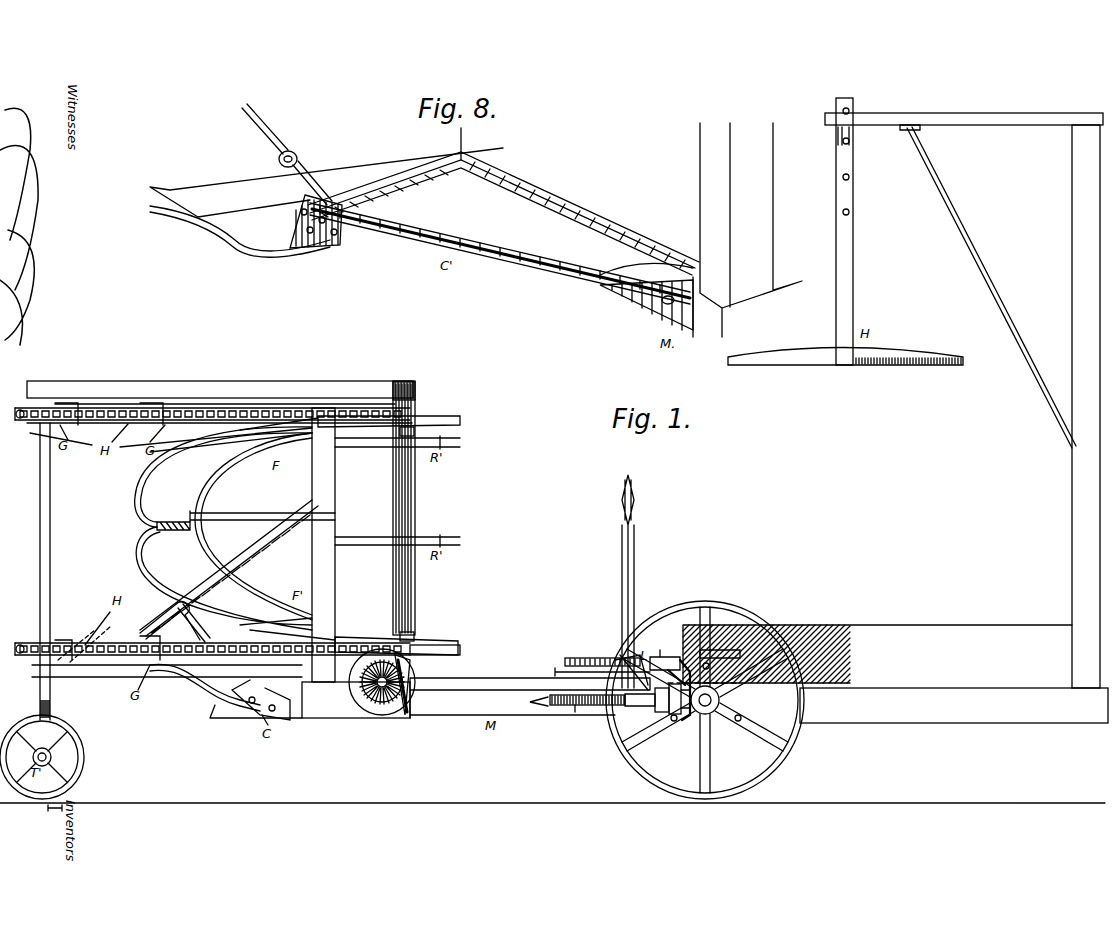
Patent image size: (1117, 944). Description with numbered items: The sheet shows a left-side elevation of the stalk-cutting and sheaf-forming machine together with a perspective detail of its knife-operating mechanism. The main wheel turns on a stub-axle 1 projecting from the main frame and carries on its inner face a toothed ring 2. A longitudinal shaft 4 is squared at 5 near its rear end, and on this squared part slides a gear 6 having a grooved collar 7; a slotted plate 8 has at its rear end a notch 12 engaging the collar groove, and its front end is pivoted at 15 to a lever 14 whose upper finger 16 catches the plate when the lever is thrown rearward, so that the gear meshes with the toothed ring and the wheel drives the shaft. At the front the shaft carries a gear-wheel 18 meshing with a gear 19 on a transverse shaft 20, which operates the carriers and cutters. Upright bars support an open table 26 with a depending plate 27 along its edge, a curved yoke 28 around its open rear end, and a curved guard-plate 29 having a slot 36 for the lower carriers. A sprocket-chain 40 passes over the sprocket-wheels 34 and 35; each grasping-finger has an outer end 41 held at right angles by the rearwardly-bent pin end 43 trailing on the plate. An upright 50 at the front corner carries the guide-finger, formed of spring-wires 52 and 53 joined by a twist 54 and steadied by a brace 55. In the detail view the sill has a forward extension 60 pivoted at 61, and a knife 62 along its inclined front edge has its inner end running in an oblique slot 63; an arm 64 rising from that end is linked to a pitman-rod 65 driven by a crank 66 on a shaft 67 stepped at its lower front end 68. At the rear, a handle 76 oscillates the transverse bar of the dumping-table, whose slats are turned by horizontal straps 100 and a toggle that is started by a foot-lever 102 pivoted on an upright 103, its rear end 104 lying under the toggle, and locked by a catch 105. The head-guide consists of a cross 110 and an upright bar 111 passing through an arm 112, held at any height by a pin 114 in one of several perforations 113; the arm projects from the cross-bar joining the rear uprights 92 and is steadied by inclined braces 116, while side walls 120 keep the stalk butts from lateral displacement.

In FIG. 1, the stub-axle 1 is at (712, 698).
In FIG. 1, the toothed ring 2 is at (690, 735).
In FIG. 1, the longitudinal shaft 4 is at (485, 690).
In FIG. 1, the squared portion of shaft 5 is at (658, 712).
In FIG. 1, the gear 6 is at (672, 714).
In FIG. 1, the grooved collar 7 is at (683, 712).
In FIG. 1, the plate 8 is at (600, 706).
In FIG. 1, the notch 12 is at (680, 664).
In FIG. 1, the lever 14 is at (560, 705).
In FIG. 1, the pivot 15 is at (540, 700).
In FIG. 1, the finger 16 is at (580, 706).
In FIG. 1, the gear-wheel 18 is at (404, 712).
In FIG. 1, the gear 19 is at (380, 705).
In FIG. 1, the transverse shaft 20 is at (350, 690).
In FIG. 1, the open table 26 is at (220, 383).
In FIG. 1, the depending plate 27 is at (210, 445).
In FIG. 1, the curved yoke 28 is at (415, 386).
In FIG. 1, the curved guard-plate 29 is at (415, 500).
In FIG. 1, the sprocket-wheel 34 is at (18, 420).
In FIG. 1, the sprocket-wheel 35 is at (414, 432).
In FIG. 1, the slot 36 is at (360, 640).
In FIG. 1, the sprocket-chain 40 is at (195, 410).
In FIG. 1, the outer end of grasping-finger 41 is at (460, 420).
In FIG. 1, the rearwardly-bent end of pivot-pin 43 is at (160, 403).
In FIG. 1, the upright 50 is at (335, 503).
In FIG. 1, the spring-wire 52 is at (252, 470).
In FIG. 1, the spring-wire 53 is at (270, 605).
In FIG. 1, the twist 54 is at (183, 522).
In FIG. 1, the brace 55 is at (245, 513).
In FIG. 8, the forward extension of sill 60 is at (503, 213).
In FIG. 8, the pivot point 61 is at (662, 300).
In FIG. 8, the knife 62 is at (500, 260).
In FIG. 8, the oblique slot 63 is at (311, 221).
In FIG. 8, the arm 64 is at (300, 170).
In FIG. 1, the arm 64 is at (222, 690).
In FIG. 8, the pitman-rod 65 is at (262, 128).
In FIG. 1, the pitman-rod 65 is at (205, 625).
In FIG. 1, the crank 66 is at (162, 615).
In FIG. 1, the shaft 67 is at (255, 555).
In FIG. 1, the lower front end of shaft 68 is at (92, 665).
In FIG. 1, the handle 76 is at (634, 545).
In FIG. 1, the rear upright 92 is at (1072, 312).
In FIG. 1, the horizontal strap 100 is at (638, 662).
In FIG. 1, the foot-lever 102 is at (590, 658).
In FIG. 1, the upright 103 is at (600, 672).
In FIG. 1, the rear end of foot-lever 104 is at (725, 665).
In FIG. 1, the catch or button 105 is at (664, 657).
In FIG. 1, the cross 110 is at (820, 350).
In FIG. 1, the upright bar 111 is at (853, 238).
In FIG. 1, the arm 112 is at (965, 104).
In FIG. 1, the transverse perforation 113 is at (849, 143).
In FIG. 1, the pin 114 is at (849, 110).
In FIG. 1, the inclined brace 116 is at (963, 240).
In FIG. 1, the side wall 120 is at (920, 625).